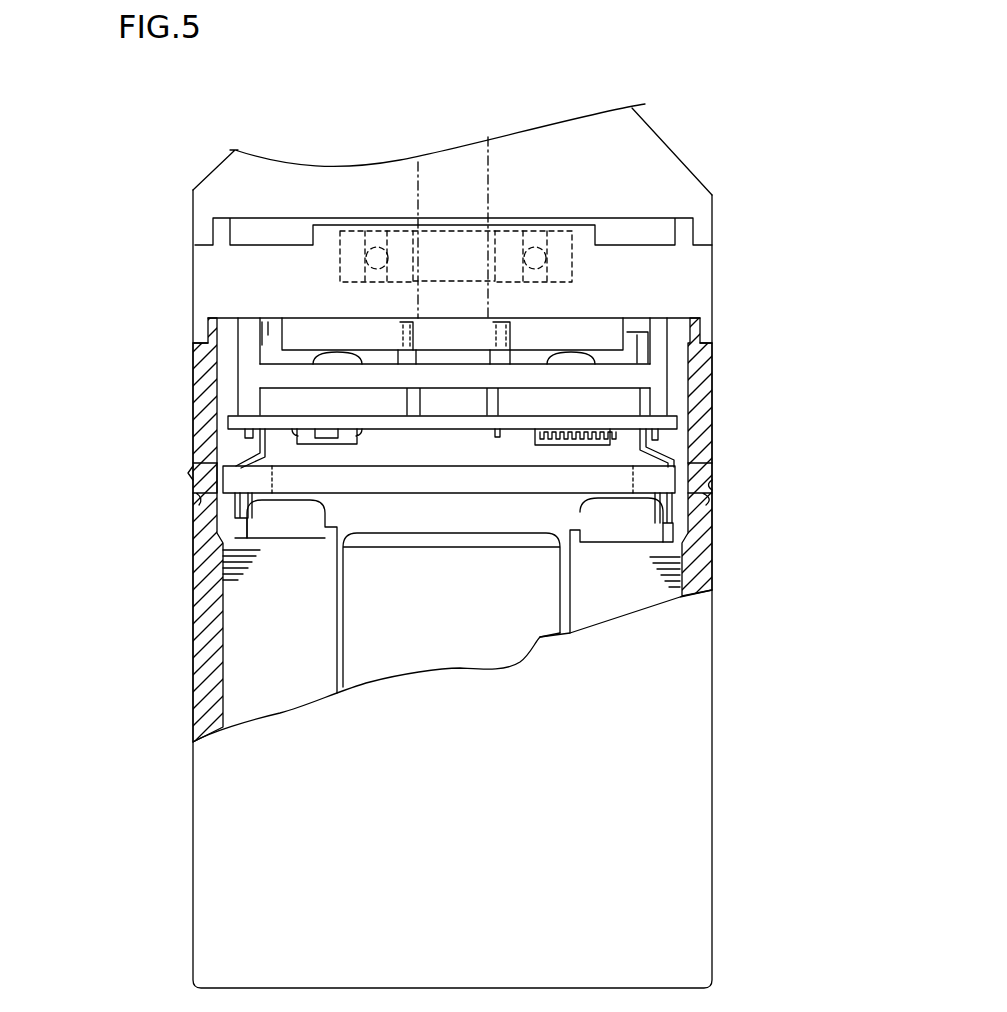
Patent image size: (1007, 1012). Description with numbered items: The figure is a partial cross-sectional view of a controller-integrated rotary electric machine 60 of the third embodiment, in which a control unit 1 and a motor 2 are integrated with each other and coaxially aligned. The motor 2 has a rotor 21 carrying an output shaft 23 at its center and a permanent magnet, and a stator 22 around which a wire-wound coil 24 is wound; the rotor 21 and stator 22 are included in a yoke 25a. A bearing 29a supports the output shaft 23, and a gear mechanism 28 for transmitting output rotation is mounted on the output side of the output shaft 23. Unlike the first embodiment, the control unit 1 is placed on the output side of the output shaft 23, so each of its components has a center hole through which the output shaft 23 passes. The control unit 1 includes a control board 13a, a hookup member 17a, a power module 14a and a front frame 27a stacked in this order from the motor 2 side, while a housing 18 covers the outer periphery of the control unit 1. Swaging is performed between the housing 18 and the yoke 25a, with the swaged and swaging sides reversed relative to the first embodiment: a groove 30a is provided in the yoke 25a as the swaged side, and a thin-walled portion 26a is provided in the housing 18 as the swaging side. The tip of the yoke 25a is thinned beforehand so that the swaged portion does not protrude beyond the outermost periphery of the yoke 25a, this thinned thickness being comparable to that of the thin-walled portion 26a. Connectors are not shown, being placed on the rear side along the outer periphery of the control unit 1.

The control unit 1 is at (197, 372).
The motor 2 is at (713, 835).
The control board 13a is at (677, 418).
The power module 14a is at (618, 328).
The hookup member 17a is at (227, 391).
The housing 18 is at (712, 378).
The rotor 21 is at (540, 633).
The stator 22 is at (223, 610).
The output shaft 23 is at (477, 523).
The wire-wound coil 24 is at (668, 538).
The yoke 25a is at (712, 525).
The thin-walled portion 26a is at (190, 475).
The front frame 27a is at (193, 289).
The gear mechanism 28 is at (690, 171).
The bearing 29a is at (573, 238).
The groove 30a is at (197, 497).
The controller-integrated rotary electric machine 60 is at (320, 163).